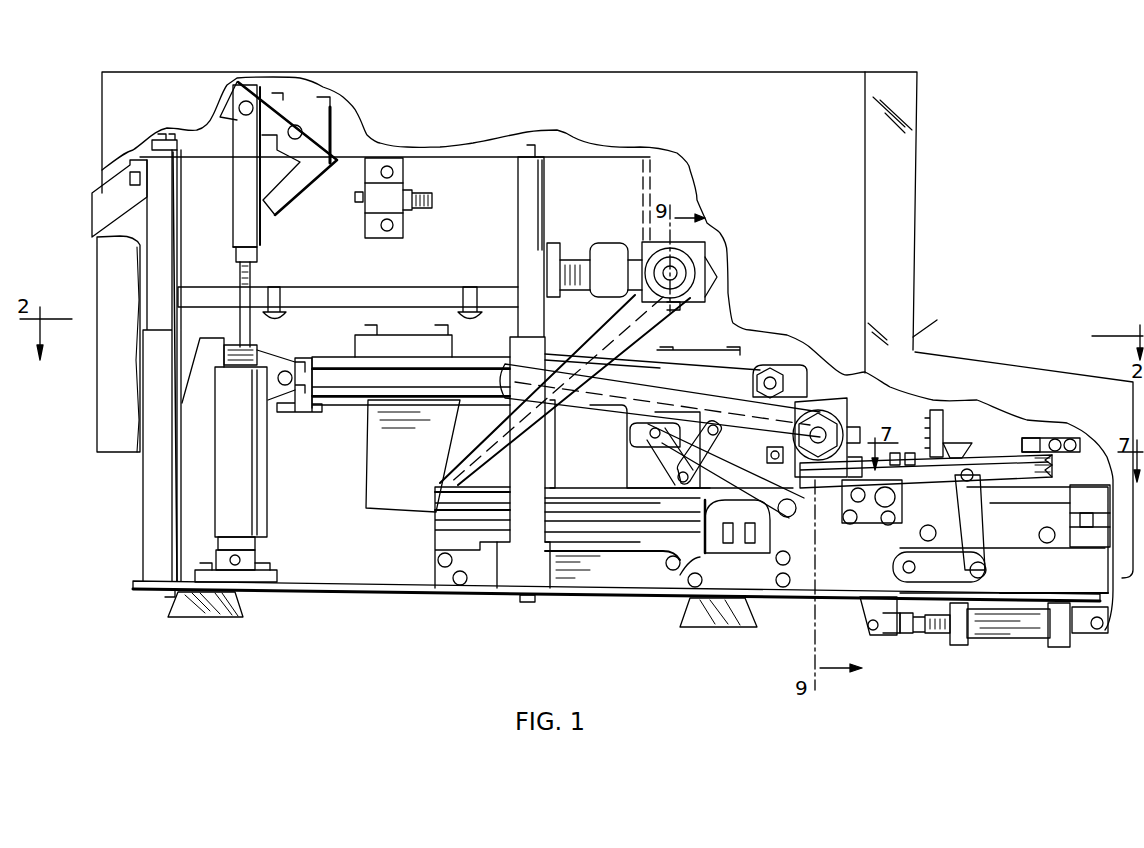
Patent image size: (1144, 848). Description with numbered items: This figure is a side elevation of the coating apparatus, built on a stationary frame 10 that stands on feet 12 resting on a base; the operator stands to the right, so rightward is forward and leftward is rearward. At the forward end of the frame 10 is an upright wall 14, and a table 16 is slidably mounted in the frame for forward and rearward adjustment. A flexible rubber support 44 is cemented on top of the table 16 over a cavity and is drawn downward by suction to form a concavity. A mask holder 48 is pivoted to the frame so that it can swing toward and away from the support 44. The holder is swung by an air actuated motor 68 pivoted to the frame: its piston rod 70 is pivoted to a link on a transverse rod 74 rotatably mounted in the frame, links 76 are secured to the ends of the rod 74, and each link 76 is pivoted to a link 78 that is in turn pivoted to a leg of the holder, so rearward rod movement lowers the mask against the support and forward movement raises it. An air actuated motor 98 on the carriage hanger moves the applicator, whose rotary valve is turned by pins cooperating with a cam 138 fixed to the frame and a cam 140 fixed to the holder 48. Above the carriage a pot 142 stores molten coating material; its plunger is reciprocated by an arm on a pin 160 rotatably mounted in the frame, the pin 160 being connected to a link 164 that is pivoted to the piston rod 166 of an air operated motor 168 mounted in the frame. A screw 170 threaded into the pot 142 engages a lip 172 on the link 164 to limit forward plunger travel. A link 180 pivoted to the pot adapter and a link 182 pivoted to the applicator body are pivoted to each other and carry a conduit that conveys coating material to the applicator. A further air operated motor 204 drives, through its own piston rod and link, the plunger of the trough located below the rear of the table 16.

The stationary frame 10 is at (150, 538).
The feet 12 is at (237, 604).
The upright wall 14 is at (1107, 588).
The table 16 is at (1045, 547).
The support 44 is at (1058, 495).
The mask holder 48 is at (1028, 445).
The air actuated motor 68 is at (1005, 628).
The piston rod 70 is at (922, 633).
The transverse rod 74 is at (909, 575).
The links 76 is at (972, 578).
The link 78 is at (1040, 543).
The air actuated motor 98 is at (413, 496).
The cam 138 is at (1037, 443).
The cam 140 is at (963, 443).
The pot 142 is at (508, 170).
The pin 160 is at (300, 128).
The link 164 is at (275, 108).
The piston rod 166 is at (250, 282).
The air operated motor 168 is at (238, 461).
The screw 170 is at (360, 192).
The lip 172 is at (306, 178).
The link 180 is at (650, 326).
The link 182 is at (845, 410).
The air operated motor 204 is at (688, 568).